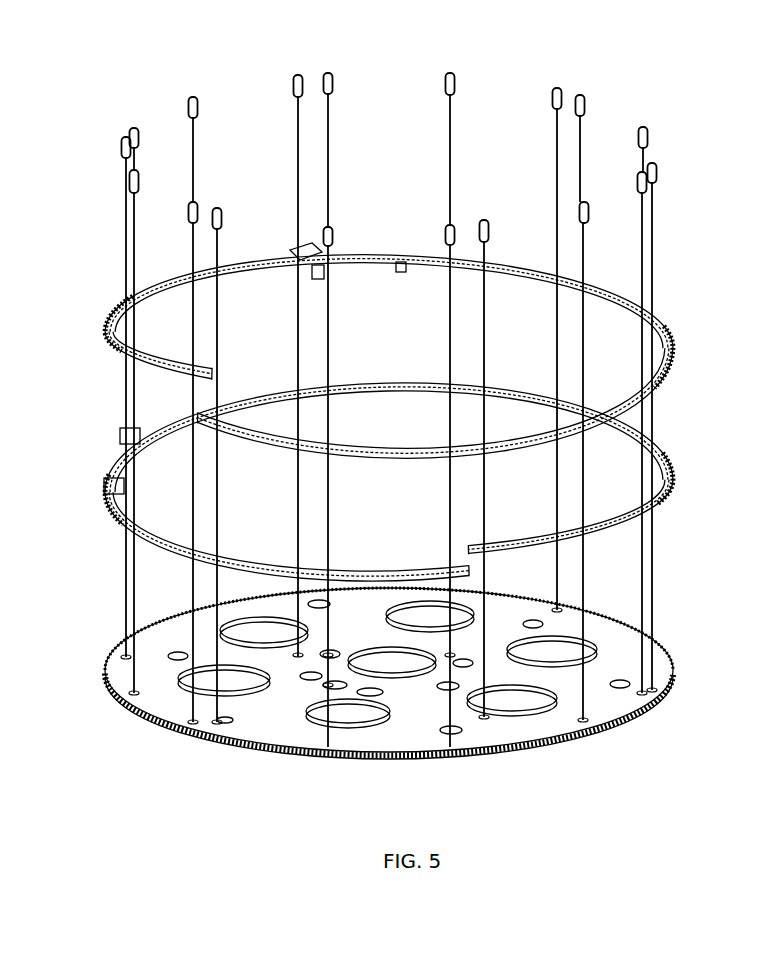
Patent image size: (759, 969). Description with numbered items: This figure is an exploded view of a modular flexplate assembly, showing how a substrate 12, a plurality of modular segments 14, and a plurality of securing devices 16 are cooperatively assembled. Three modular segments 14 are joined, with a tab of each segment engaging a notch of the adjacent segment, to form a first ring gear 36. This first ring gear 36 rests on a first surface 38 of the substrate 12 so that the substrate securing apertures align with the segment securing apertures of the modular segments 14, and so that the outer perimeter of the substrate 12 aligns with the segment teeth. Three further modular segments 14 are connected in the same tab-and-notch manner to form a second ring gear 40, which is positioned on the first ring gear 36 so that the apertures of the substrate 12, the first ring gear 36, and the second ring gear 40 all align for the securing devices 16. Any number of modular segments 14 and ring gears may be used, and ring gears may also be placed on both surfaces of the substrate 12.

The substrate 12 is at (571, 736).
The modular segments 14 is at (292, 244).
The securing devices 16 is at (460, 81).
The first ring gear 36 is at (674, 457).
The first surface 38 is at (294, 727).
The second ring gear 40 is at (677, 331).